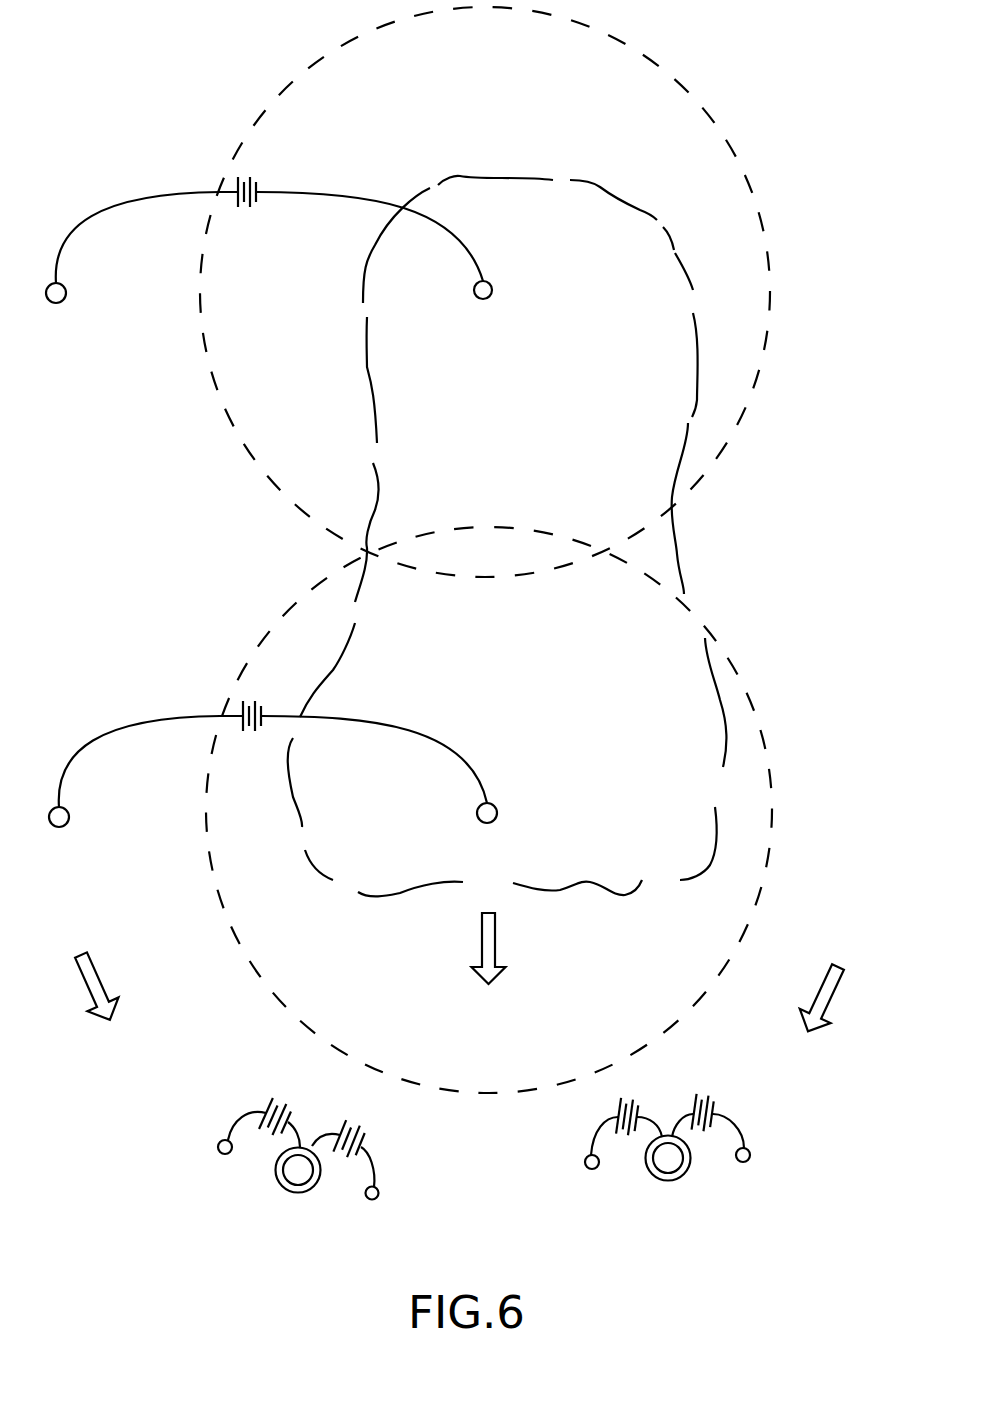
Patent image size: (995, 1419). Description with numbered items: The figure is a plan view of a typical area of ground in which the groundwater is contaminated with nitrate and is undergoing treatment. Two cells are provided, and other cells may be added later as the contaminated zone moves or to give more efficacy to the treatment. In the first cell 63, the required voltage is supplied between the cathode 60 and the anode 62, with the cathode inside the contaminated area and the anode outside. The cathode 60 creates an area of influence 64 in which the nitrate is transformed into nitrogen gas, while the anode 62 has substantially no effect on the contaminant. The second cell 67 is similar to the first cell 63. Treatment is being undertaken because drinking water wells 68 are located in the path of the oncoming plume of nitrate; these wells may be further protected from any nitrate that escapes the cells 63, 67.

The cathode 60 is at (483, 299).
The anode 62 is at (63, 301).
The first cell 63 is at (207, 166).
The area of influence 64 is at (748, 187).
The second cell 67 is at (200, 684).
The drinking water wells 68 is at (281, 1181).